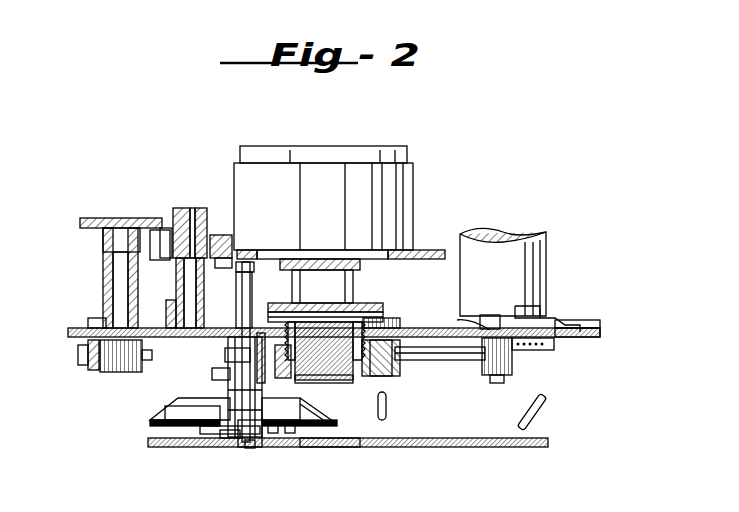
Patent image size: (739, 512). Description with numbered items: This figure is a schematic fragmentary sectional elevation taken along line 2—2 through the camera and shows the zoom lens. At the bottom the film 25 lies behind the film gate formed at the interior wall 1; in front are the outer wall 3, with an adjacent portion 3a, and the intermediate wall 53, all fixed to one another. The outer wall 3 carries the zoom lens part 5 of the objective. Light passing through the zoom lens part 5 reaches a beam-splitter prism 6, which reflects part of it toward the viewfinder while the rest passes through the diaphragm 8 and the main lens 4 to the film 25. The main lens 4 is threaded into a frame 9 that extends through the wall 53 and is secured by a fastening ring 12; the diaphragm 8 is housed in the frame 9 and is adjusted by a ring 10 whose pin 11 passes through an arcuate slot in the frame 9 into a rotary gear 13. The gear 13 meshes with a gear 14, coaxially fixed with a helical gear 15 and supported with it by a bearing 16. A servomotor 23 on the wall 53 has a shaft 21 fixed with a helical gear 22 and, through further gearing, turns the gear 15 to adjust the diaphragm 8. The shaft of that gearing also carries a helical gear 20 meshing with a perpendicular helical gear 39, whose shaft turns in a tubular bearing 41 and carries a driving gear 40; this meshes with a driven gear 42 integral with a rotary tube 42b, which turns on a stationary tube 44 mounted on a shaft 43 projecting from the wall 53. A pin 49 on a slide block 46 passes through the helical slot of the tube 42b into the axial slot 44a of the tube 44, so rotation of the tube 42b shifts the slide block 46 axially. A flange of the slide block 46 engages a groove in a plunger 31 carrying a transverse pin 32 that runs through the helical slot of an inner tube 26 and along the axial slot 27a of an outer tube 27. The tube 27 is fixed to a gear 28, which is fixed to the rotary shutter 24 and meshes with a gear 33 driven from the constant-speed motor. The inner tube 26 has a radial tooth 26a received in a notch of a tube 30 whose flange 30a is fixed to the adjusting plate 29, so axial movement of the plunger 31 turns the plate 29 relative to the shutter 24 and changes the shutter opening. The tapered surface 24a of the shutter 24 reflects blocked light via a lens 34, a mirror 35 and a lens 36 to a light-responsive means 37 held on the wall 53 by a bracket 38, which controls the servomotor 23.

The interior wall 1 is at (153, 448).
The chassis plate 2 is at (568, 338).
The outer wall 3 is at (250, 258).
The flange 3a is at (268, 258).
The main lens 4 is at (325, 340).
The zoom lens part 5 is at (255, 160).
The beam-splitter prism 6 is at (332, 270).
The diaphragm 8 is at (305, 262).
The frame 9 is at (290, 310).
The ring 10 is at (362, 312).
The pin 11 is at (300, 320).
The fastening ring 12 is at (300, 372).
The rotary gear 13 is at (250, 330).
The gear 14 is at (398, 322).
The helical gear 15 is at (337, 383).
The bearing 16 is at (400, 360).
The helical gear 20 is at (110, 372).
The servomotor shaft 21 is at (494, 324).
The helical gear 22 is at (486, 376).
The servomotor 23 is at (537, 245).
The rotary shutter means 24 is at (178, 410).
The tapered surface portion 24a is at (338, 416).
The film 25 is at (327, 450).
The inner telescoped tube 26 is at (225, 440).
The radial tooth 26a is at (243, 447).
The outer telescoped tube 27 is at (215, 432).
The axial slot 27a is at (270, 410).
The gear 28 is at (226, 355).
The adjusting plate 29 is at (292, 432).
The tube 30 is at (252, 448).
The flange 30a is at (276, 432).
The plunger 31 is at (240, 317).
The transverse pin 32 is at (262, 350).
The gear 33 is at (212, 376).
The lens 34 is at (382, 422).
The mirror 35 is at (540, 408).
The lens 36 is at (540, 350).
The light-responsive means 37 is at (540, 312).
The bracket 38 is at (572, 325).
The helical gear 39 is at (130, 372).
The driving gear 40 is at (115, 222).
The tubular bearing 41 is at (100, 322).
The driven gear 42 is at (170, 222).
The rotary tube 42b is at (176, 318).
The shaft 43 is at (200, 212).
The stationary tube 44 is at (186, 210).
The axial slot 44a is at (190, 283).
The slide block 46 is at (155, 232).
The pin 49 is at (222, 236).
The intermediate wall 53 is at (470, 328).